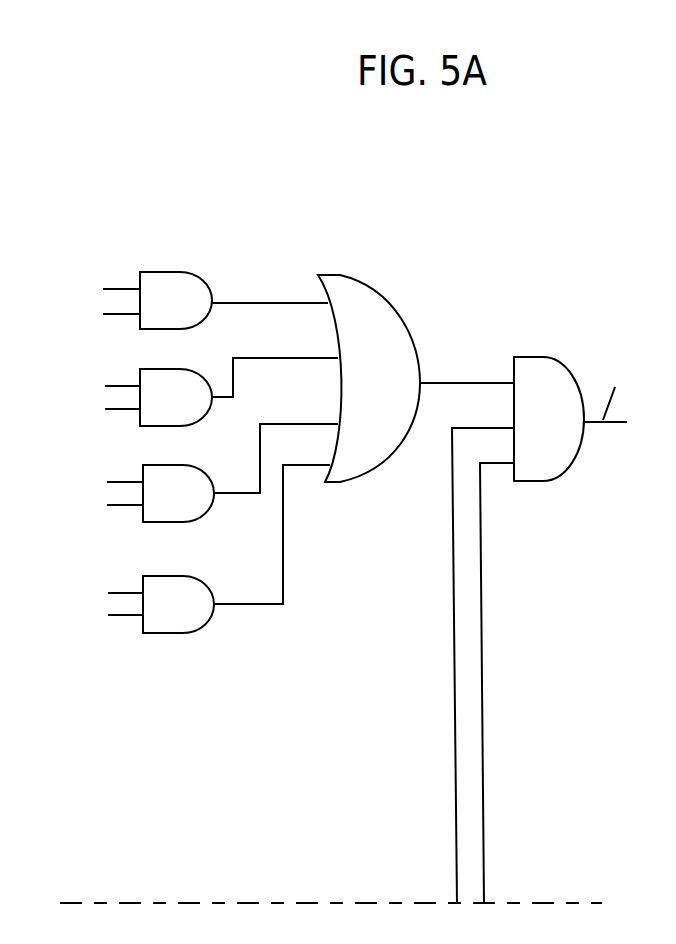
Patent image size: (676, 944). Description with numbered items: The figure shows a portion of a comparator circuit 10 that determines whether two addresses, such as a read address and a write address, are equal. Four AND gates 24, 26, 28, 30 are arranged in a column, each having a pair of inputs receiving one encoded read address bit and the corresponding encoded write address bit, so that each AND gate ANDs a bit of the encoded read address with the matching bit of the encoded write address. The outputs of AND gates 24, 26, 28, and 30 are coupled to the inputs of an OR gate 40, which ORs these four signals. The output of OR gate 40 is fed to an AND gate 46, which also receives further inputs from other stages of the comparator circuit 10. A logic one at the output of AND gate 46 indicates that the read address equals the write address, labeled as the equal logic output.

The comparator circuit 10 is at (440, 288).
The AND gate 24 is at (179, 311).
The AND gate 26 is at (179, 412).
The AND gate 28 is at (181, 508).
The AND gate 30 is at (181, 615).
The OR gate 40 is at (384, 390).
The AND gate 46 is at (561, 432).